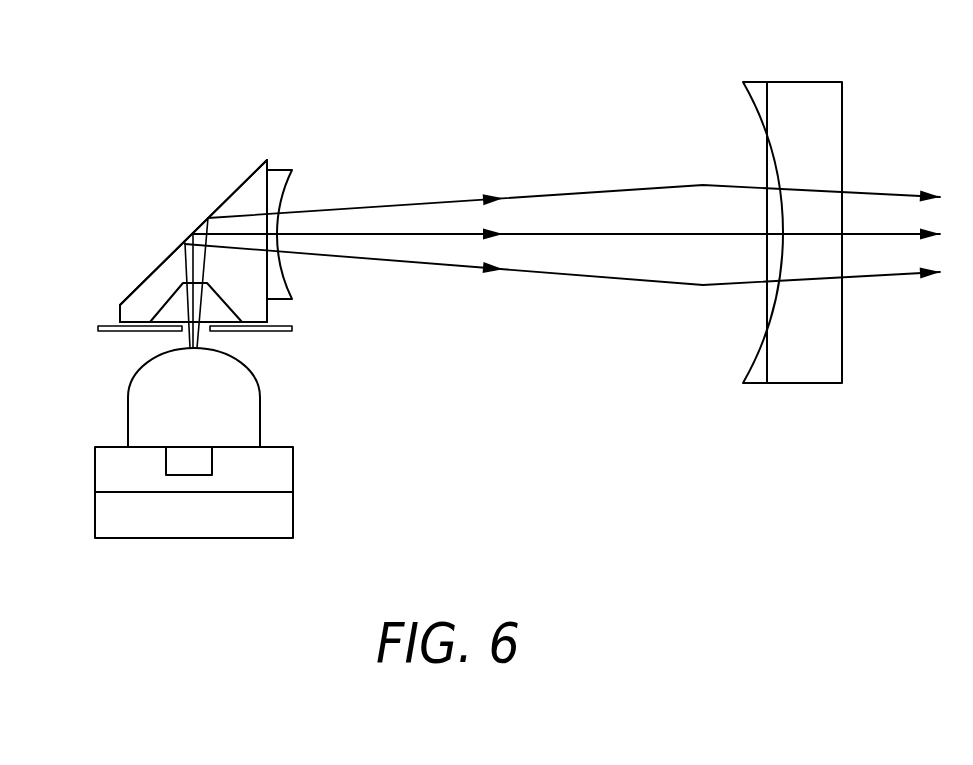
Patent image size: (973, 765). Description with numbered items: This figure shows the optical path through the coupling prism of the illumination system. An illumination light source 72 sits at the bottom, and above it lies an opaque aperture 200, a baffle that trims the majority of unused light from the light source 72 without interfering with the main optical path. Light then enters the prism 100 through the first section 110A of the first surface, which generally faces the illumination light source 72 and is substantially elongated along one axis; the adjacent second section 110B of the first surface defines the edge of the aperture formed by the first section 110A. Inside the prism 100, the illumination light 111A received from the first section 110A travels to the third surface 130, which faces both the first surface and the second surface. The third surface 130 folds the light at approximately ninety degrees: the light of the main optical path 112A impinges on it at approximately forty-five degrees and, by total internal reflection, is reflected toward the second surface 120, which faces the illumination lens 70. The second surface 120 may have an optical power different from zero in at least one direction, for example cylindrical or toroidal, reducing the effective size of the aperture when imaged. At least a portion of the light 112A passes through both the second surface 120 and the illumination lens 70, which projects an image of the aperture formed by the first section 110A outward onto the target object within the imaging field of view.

The illumination lens 70 is at (755, 82).
The illumination light source 72 is at (260, 424).
The prism 100 is at (126, 299).
The first section 110A is at (200, 298).
The second section 110B is at (162, 309).
The illumination light 111A is at (185, 245).
The light of the main optical path 112A is at (529, 193).
The second surface 120 is at (286, 170).
The third surface 130 is at (158, 267).
The opaque aperture 200 is at (118, 332).